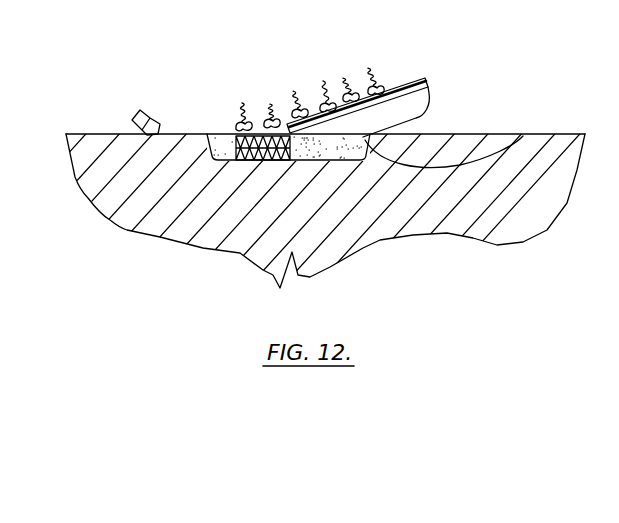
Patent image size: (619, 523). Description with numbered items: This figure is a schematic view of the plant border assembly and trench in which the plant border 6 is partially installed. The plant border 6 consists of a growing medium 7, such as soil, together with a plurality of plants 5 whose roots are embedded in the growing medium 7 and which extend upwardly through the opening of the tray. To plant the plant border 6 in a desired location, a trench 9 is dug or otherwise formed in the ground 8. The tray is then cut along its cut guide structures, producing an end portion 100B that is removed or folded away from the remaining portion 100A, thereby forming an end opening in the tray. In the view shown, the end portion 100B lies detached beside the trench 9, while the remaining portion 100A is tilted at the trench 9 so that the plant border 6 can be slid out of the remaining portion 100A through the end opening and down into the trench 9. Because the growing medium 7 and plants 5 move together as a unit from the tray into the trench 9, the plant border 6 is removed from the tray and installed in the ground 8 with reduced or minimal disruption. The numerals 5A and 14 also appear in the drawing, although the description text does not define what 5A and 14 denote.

The plants 5 is at (331, 90).
The bristle tip 5A is at (368, 68).
The plant border 6 is at (364, 62).
The growing medium 7 is at (263, 162).
The ground 8 is at (439, 212).
The trench 9 is at (523, 136).
The recess 14 is at (261, 190).
The remaining portion 100A is at (429, 98).
The end portion 100B is at (153, 114).